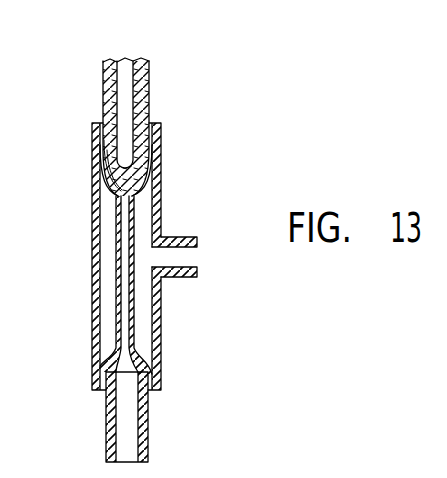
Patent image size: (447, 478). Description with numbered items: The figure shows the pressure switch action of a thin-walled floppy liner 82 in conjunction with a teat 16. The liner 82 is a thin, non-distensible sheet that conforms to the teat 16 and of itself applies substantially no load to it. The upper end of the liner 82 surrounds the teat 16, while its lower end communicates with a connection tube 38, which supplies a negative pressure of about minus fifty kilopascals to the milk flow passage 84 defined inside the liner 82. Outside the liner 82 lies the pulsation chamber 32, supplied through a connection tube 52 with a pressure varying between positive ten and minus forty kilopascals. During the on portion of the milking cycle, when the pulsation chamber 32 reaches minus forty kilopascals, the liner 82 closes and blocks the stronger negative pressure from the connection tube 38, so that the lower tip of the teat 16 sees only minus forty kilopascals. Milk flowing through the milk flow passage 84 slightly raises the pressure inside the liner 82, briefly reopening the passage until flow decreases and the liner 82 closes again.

The teat 16 is at (113, 62).
The pulsation chamber 32 is at (142, 223).
The connection tube 52 is at (187, 277).
The thin-walled floppy liner 82 is at (122, 322).
The milk flow passage 84 is at (125, 364).
The connection tube 38 is at (146, 432).